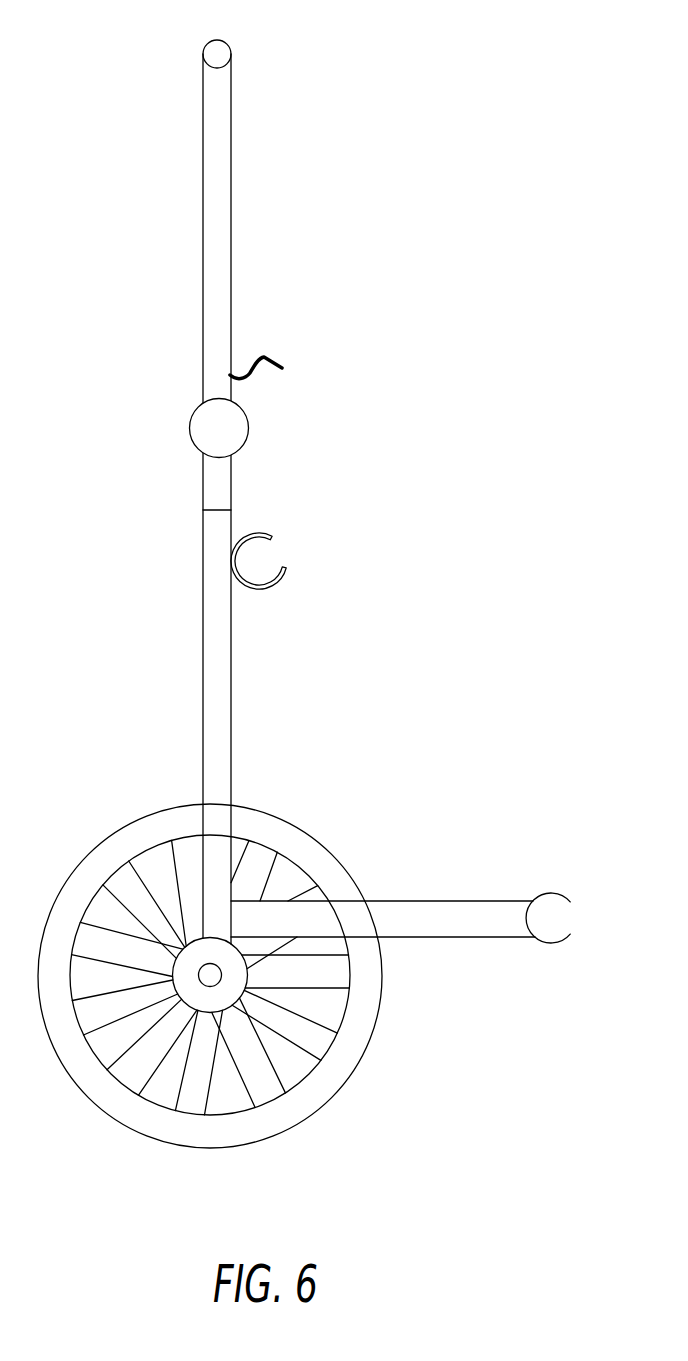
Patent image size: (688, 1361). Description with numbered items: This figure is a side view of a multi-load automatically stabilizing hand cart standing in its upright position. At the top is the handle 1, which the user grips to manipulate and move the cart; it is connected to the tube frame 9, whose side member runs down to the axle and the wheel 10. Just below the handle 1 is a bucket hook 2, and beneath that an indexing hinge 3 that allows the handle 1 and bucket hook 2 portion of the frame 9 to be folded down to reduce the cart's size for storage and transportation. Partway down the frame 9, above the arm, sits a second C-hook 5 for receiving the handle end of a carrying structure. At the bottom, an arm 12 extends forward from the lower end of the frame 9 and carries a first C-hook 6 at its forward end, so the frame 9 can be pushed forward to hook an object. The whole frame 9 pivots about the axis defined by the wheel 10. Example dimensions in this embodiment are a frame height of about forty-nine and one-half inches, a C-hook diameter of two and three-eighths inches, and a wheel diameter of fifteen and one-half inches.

The handle 1 is at (222, 42).
The bucket hook 2 is at (267, 357).
The indexing hinge 3 is at (248, 428).
The second C-hook 5 is at (270, 590).
The first C-hook 6 is at (553, 893).
The tube frame 9 is at (218, 690).
The wheel 10 is at (303, 850).
The arm 12 is at (423, 920).